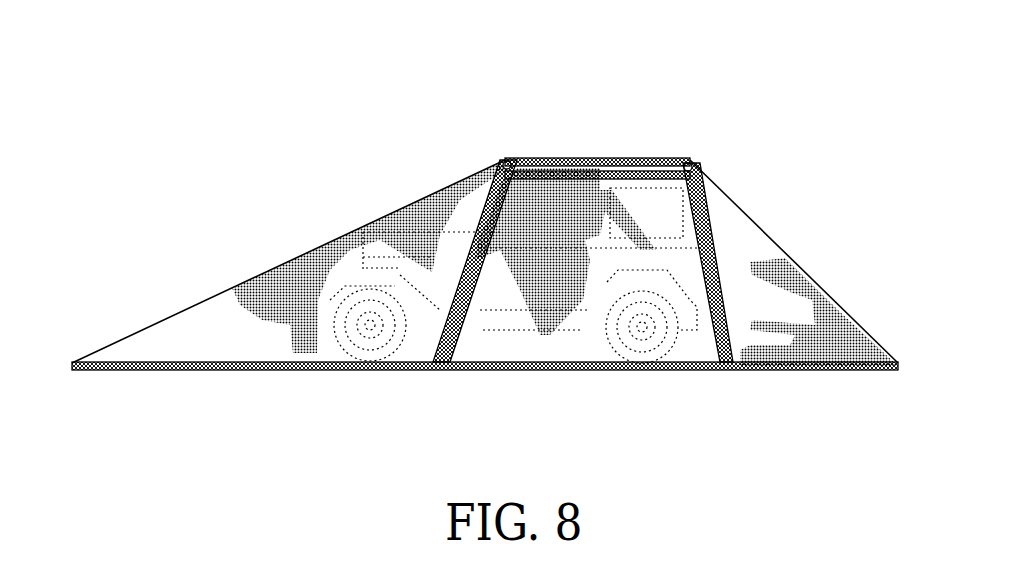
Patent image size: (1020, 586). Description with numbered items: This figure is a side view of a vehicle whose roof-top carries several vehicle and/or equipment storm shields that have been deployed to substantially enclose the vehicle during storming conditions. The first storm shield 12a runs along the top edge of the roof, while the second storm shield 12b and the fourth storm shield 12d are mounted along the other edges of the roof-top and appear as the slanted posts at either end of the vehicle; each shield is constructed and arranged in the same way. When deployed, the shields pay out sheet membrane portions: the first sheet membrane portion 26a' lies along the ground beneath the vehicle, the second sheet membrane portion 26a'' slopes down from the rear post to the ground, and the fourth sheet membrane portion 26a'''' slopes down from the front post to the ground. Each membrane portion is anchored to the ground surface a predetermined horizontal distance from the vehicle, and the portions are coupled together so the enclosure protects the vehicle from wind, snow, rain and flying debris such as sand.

The first vehicle and/or equipment storm shield 12a is at (627, 166).
The second vehicle and/or equipment storm shield 12b is at (507, 161).
The fourth vehicle and/or equipment storm shield 12d is at (692, 160).
The first sheet membrane portion 26a' is at (485, 396).
The second sheet membrane portion 26a'' is at (288, 258).
The fourth sheet membrane portion 26a'''' is at (795, 263).